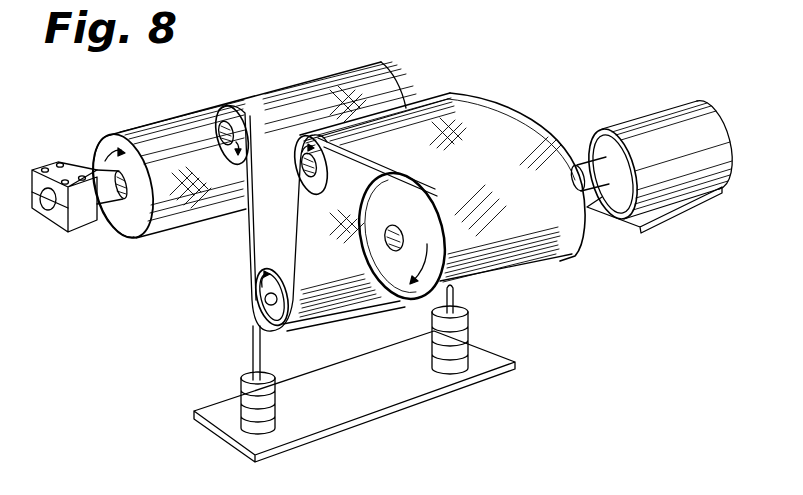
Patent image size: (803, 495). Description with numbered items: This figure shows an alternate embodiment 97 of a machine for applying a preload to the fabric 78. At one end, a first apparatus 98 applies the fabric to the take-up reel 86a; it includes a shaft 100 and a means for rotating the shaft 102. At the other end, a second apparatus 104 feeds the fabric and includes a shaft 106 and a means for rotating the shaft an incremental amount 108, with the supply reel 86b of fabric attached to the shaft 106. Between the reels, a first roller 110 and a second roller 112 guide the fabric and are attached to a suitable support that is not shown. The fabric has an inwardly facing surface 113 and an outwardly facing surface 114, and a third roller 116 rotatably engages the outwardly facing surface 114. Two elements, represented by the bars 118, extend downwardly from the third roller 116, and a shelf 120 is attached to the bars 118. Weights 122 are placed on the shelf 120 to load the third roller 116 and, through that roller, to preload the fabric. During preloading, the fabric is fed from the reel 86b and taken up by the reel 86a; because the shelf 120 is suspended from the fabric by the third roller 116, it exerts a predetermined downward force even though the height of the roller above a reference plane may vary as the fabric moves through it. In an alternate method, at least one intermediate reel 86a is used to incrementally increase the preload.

The fabric 78 is at (507, 123).
The reel 86a is at (370, 299).
The reel of fabric 86b is at (129, 238).
The alternate embodiment of a machine 97 is at (165, 298).
The first apparatus 98 is at (576, 250).
The shaft 100 is at (583, 171).
The means for rotating the shaft 102 is at (695, 158).
The second apparatus 104 is at (120, 239).
The shaft 106 is at (90, 164).
The means for rotating the shaft an incremental amount 108 is at (79, 222).
The first roller 110 is at (221, 107).
The second roller 112 is at (306, 186).
The inwardly facing surface 113 is at (352, 272).
The outwardly facing surface 114 is at (407, 154).
The third roller 116 is at (260, 274).
The bars 118 is at (457, 301).
The shelf 120 is at (346, 372).
The weights 122 is at (247, 371).